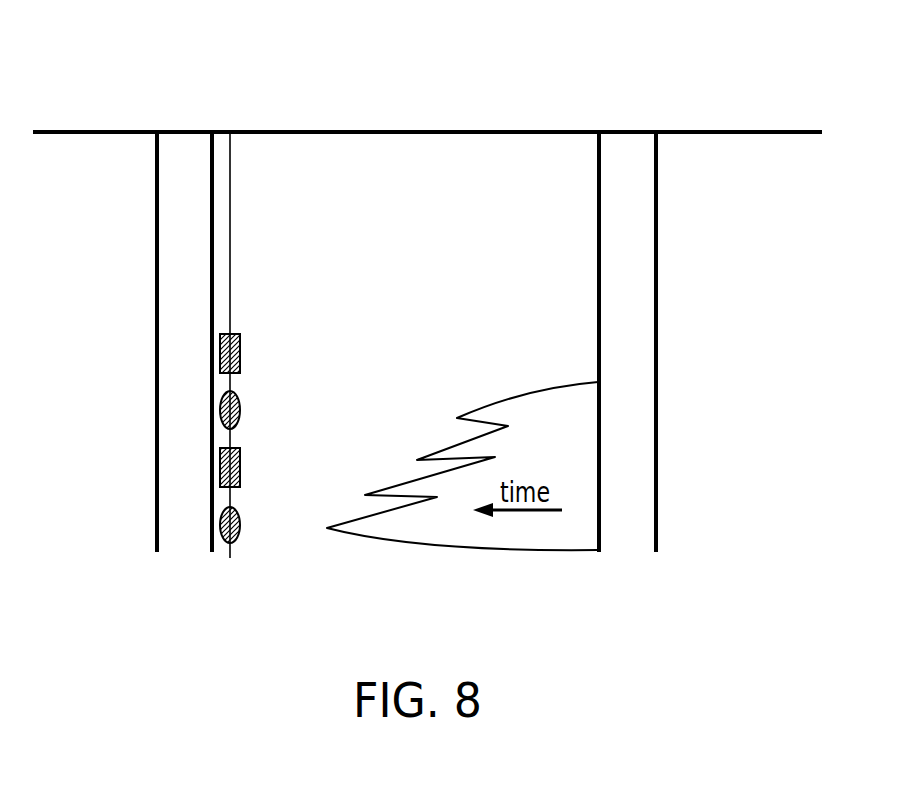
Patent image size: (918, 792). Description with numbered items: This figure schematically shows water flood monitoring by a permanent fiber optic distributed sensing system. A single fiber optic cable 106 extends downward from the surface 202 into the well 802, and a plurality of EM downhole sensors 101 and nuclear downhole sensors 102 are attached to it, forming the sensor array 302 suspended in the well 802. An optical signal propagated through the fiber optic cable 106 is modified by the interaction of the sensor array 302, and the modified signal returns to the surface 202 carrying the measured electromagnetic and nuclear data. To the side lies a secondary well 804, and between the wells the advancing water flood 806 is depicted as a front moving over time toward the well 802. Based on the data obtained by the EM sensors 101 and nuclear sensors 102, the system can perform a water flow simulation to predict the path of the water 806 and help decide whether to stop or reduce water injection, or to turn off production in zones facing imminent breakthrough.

The surface 202 is at (75, 130).
The well 802 is at (187, 140).
The secondary well 804 is at (632, 140).
The fiber optic cable 106 is at (230, 193).
The electromagnetic downhole sensor 101 is at (240, 352).
The nuclear downhole sensor 102 is at (240, 408).
The sensor array 302 is at (241, 479).
The water flood 806 is at (528, 397).